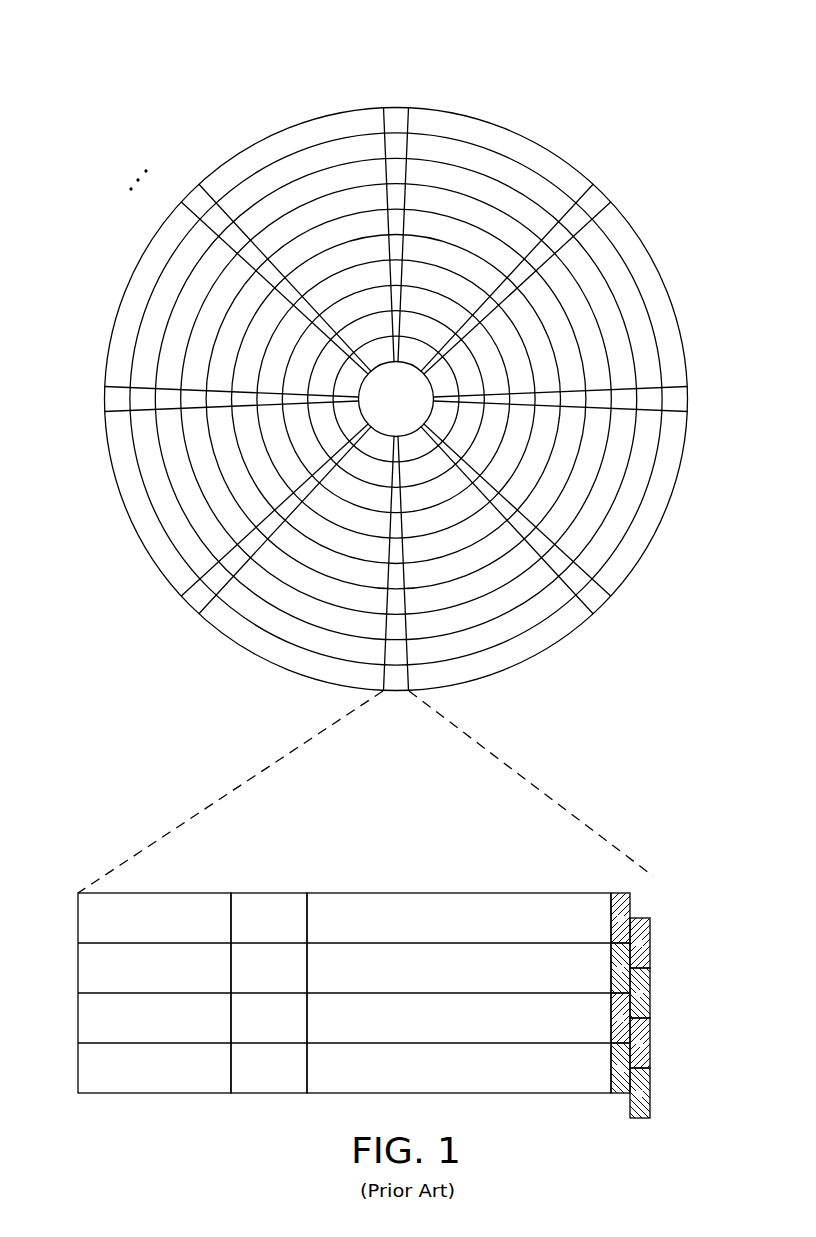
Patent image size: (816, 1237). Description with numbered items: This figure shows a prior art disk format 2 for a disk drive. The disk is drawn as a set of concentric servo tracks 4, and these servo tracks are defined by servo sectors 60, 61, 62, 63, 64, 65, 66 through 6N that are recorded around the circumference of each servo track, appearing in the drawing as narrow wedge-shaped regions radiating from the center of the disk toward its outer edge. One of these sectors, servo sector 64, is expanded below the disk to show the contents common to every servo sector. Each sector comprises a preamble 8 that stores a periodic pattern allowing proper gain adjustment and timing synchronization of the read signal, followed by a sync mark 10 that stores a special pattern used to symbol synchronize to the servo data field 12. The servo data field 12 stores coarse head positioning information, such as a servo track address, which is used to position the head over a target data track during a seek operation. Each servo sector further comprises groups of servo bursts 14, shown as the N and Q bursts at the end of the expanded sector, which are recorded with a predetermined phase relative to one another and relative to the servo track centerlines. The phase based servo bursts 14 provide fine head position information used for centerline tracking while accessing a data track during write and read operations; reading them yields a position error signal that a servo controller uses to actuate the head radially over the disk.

The disk format 2 is at (182, 112).
The servo tracks 4 is at (494, 165).
The servo sector 60 is at (397, 118).
The servo sector 61 is at (593, 200).
The servo sector 62 is at (680, 399).
The servo sector 63 is at (595, 605).
The servo sector 64 is at (267, 758).
The servo sector 65 is at (195, 600).
The servo sector 66 is at (100, 398).
The servo sector 6N is at (194, 192).
The preamble 8 is at (163, 893).
The sync mark 10 is at (271, 893).
The servo data field 12 is at (448, 893).
The servo bursts 14 is at (645, 891).